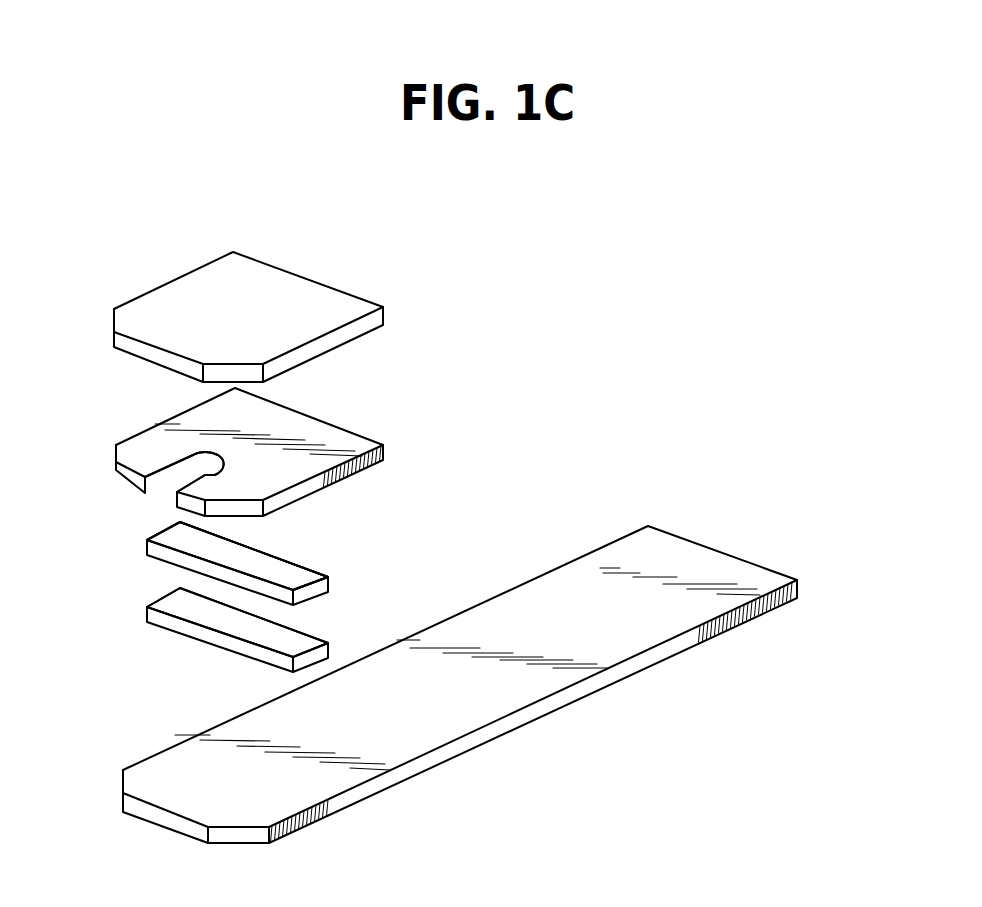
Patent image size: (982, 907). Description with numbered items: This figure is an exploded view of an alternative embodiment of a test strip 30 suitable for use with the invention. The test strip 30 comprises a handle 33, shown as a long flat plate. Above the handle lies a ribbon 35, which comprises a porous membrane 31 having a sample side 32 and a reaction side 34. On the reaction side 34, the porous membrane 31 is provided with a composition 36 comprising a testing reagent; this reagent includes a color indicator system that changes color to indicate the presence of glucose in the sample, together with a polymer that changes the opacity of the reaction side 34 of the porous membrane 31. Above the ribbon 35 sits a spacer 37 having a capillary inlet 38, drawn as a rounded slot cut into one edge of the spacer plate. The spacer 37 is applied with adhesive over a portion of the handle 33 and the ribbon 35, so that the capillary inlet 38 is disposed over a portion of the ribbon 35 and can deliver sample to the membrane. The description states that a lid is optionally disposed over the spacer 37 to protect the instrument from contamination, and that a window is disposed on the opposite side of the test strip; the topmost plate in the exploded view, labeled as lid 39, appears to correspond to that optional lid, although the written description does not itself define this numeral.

The test strip 30 is at (812, 222).
The porous membrane 31 is at (148, 608).
The sample side 32 is at (302, 572).
The handle 33 is at (680, 548).
The reaction side 34 is at (180, 602).
The ribbon 35 is at (147, 543).
The composition 36 is at (260, 560).
The spacer 37 is at (323, 430).
The capillary inlet 38 is at (167, 473).
The cover plate 39 is at (327, 298).